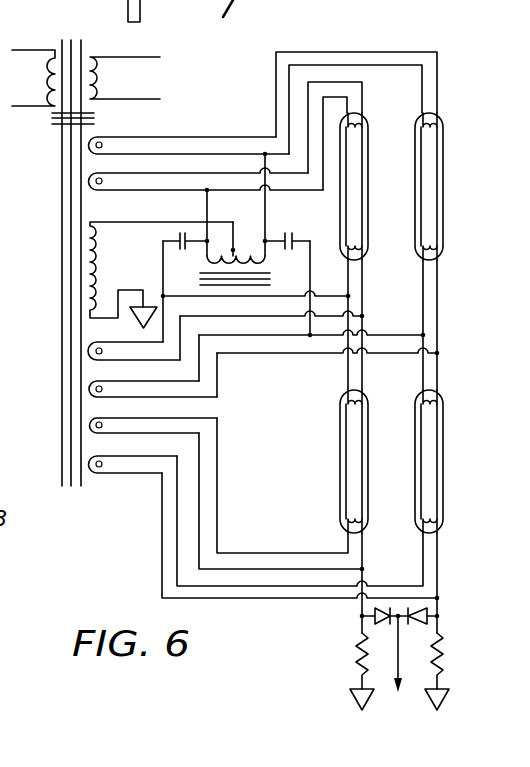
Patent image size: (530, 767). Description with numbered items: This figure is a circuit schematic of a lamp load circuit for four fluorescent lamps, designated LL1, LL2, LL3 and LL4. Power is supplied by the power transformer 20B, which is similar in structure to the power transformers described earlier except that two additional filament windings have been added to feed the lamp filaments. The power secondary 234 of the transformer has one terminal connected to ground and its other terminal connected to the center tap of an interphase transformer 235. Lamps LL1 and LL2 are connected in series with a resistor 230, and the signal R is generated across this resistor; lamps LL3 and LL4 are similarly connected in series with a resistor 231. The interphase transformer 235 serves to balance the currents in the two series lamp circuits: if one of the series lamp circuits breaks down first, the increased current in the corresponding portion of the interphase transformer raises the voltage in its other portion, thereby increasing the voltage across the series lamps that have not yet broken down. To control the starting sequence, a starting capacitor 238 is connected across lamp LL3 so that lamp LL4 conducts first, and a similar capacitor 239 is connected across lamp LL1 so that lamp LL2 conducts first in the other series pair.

The power transformer 20B is at (104, 30).
The power secondary 234 is at (102, 268).
The interphase transformer 235 is at (254, 230).
The starting capacitor 238 is at (292, 233).
The capacitor 239 is at (182, 232).
The fluorescent lamp LL1 is at (370, 181).
The fluorescent lamp LL2 is at (373, 440).
The fluorescent lamp LL3 is at (417, 221).
The fluorescent lamp LL4 is at (417, 490).
The resistor 230 is at (356, 655).
The resistor 231 is at (442, 644).
The signal R is at (397, 670).